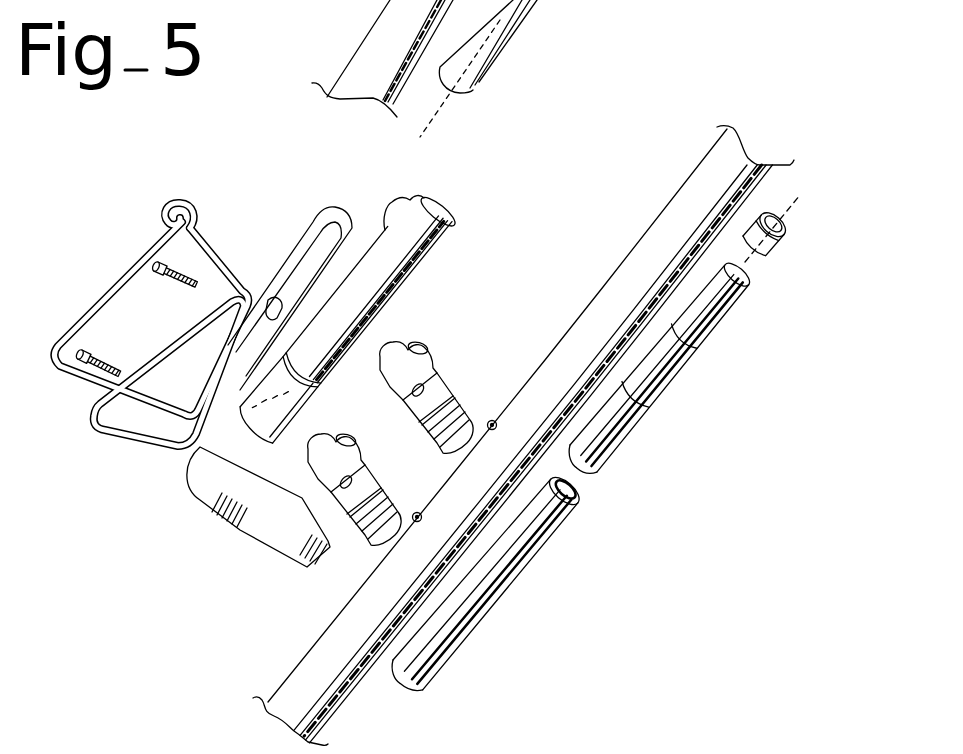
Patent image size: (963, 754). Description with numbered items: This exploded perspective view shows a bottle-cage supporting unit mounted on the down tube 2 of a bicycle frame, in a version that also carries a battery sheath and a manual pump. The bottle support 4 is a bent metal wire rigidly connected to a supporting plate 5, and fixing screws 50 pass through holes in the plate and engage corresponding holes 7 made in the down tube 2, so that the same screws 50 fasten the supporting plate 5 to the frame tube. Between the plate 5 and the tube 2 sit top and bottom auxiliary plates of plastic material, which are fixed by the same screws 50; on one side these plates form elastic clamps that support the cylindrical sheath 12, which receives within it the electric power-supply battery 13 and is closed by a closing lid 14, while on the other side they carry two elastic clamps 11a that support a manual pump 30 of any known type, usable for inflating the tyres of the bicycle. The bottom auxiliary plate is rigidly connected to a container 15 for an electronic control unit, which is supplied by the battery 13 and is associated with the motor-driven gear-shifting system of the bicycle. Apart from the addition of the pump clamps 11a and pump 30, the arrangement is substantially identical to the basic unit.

The down tube 2 is at (322, 672).
The support 4 is at (110, 250).
The supporting plate 5 is at (248, 304).
The holes 7 is at (422, 518).
The elastic clamps 11a is at (403, 362).
The cylindrical sheath 12 is at (482, 590).
The battery 13 is at (705, 312).
The closing lid 14 is at (782, 242).
The container 15 is at (250, 497).
The manual pump 30 is at (384, 260).
The fixing screws 50 is at (178, 280).